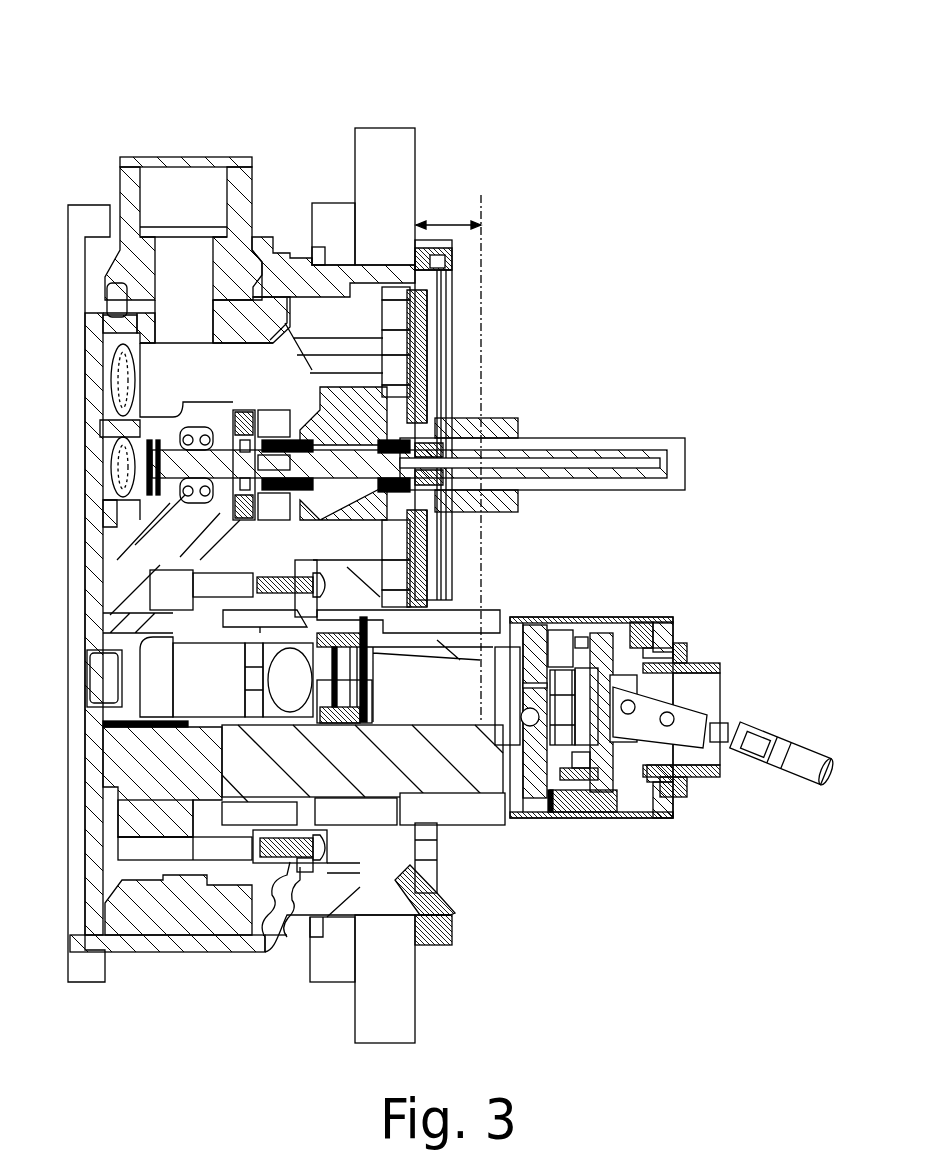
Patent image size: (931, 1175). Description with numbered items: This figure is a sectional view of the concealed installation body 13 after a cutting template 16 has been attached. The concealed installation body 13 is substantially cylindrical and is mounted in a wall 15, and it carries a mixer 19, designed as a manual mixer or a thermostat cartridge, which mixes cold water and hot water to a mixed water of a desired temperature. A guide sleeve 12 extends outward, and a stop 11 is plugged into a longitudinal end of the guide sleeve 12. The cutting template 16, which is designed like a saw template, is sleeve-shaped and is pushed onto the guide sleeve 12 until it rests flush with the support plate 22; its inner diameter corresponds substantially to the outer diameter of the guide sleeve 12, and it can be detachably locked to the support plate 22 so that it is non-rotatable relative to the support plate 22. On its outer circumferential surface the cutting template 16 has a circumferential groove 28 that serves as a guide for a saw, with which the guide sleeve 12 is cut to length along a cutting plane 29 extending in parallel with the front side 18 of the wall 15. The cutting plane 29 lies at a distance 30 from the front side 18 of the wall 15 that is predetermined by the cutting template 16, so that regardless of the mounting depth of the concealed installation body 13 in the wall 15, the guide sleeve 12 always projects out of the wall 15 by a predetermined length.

The stop 11 is at (686, 462).
The guide sleeve 12 is at (656, 492).
The concealed installation body 13 is at (125, 105).
The wall 15 is at (385, 150).
The cutting template 16 is at (518, 420).
The front side 18 is at (415, 153).
The mixer 19 is at (507, 875).
The support plate 22 is at (448, 265).
The circumferential groove 28 is at (485, 513).
The cutting plane 29 is at (482, 310).
The distance 30 is at (448, 220).